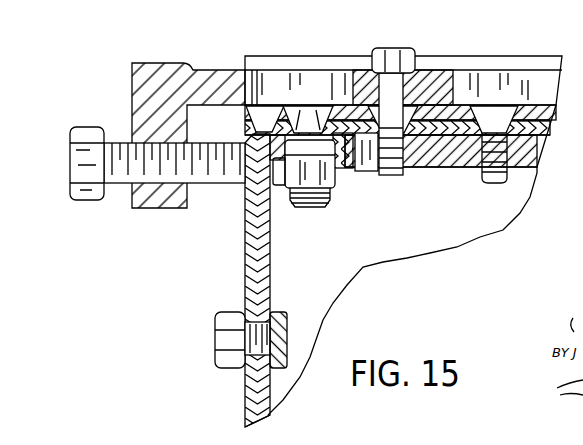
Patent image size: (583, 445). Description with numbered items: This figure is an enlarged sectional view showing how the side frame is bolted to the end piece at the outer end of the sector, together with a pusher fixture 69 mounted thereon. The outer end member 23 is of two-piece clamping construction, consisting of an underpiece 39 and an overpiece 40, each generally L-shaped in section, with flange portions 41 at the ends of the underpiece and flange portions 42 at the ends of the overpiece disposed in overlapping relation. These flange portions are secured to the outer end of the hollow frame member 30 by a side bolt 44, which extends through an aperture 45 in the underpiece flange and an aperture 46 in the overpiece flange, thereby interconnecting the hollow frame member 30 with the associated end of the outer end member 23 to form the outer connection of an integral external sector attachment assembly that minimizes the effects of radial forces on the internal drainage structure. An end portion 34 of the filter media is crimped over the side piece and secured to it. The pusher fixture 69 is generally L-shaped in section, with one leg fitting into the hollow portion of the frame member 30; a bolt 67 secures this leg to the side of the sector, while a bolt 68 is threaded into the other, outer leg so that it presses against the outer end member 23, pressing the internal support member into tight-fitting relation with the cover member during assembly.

The pusher fixture 69 is at (176, 63).
The hollow frame member 30 is at (471, 70).
The end portion of the filter media 34 is at (543, 123).
The bolt 67 is at (418, 98).
The aperture 46 is at (256, 135).
The bolt 68 is at (72, 198).
The aperture 45 is at (243, 210).
The side bolt 44 is at (310, 207).
The flange portion of the overpiece 42 is at (348, 152).
The flange portion of the underpiece 41 is at (356, 155).
The overpiece 40 is at (240, 263).
The underpiece 39 is at (268, 262).
The outer end member 23 is at (238, 392).